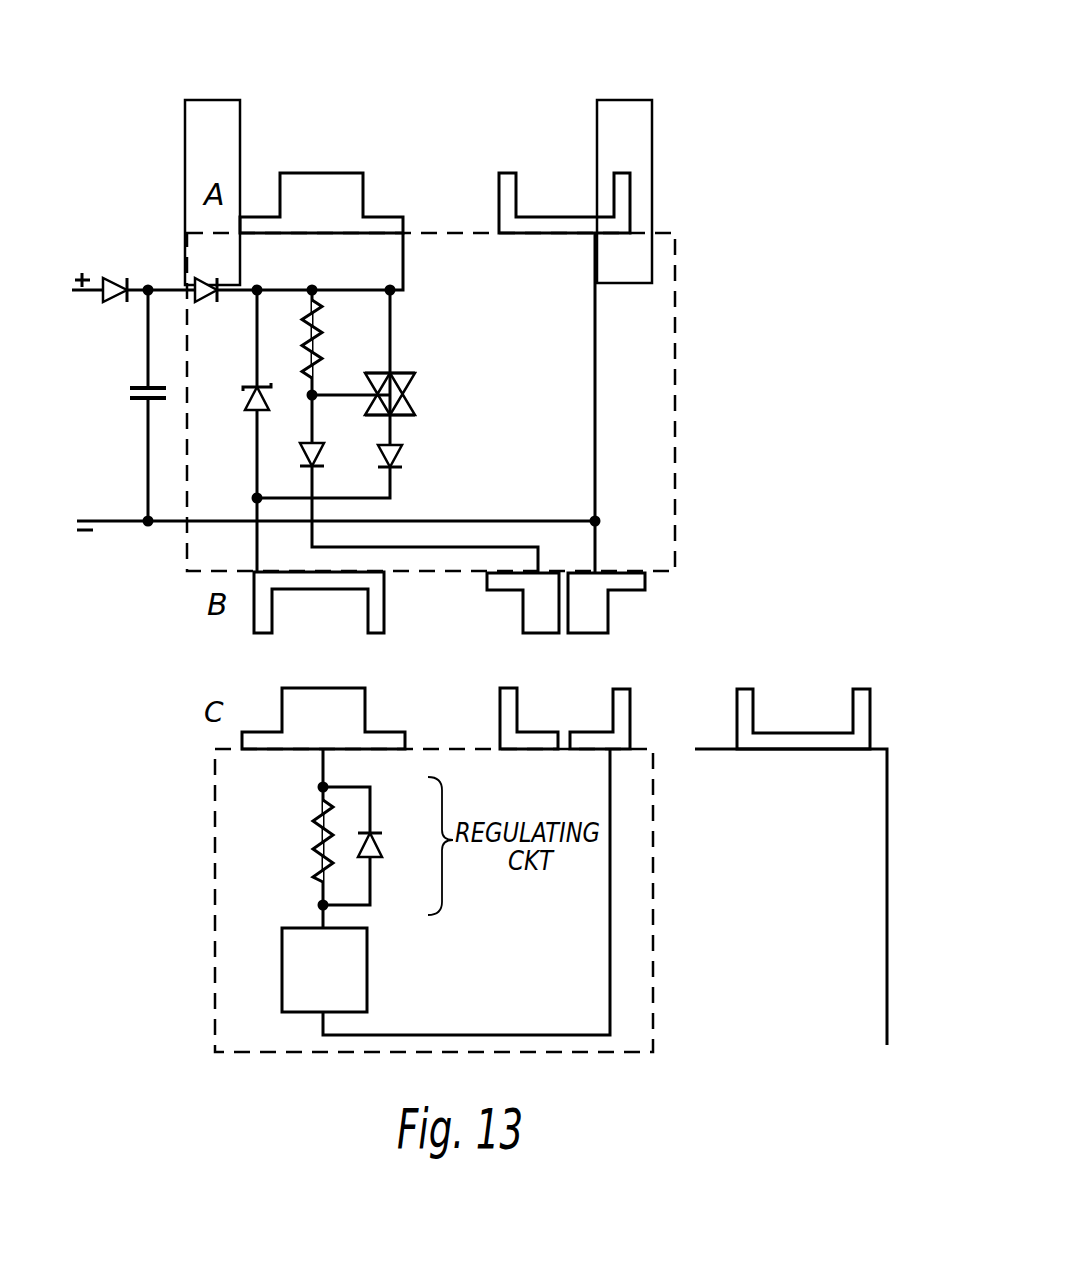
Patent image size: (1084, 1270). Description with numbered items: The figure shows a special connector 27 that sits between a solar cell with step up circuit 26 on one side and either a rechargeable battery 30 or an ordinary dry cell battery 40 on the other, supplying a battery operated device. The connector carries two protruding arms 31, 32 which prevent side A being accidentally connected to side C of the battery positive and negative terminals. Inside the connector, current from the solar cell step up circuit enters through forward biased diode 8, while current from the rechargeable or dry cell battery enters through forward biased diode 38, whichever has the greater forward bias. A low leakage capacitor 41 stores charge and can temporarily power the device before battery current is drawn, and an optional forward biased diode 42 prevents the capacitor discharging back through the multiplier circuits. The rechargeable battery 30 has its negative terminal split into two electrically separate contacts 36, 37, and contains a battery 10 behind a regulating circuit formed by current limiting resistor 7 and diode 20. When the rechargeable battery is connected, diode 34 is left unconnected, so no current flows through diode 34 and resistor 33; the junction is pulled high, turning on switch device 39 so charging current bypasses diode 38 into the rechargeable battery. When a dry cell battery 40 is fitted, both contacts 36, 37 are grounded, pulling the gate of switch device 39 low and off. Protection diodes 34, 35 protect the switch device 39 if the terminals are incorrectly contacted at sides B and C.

The protruding arm 32 is at (225, 100).
The protruding arm 31 is at (630, 100).
The forward-biased diode 42 is at (113, 278).
The diode 8 is at (200, 302).
The low leakage capacitor 41 is at (138, 400).
The diode 38 is at (245, 397).
The resistor 33 is at (320, 340).
The switch device 39 is at (410, 372).
The diode 34 is at (322, 452).
The protection diode 35 is at (402, 456).
The connector 27 is at (714, 386).
The contact 36 is at (530, 615).
The contact 37 is at (590, 622).
The step up circuit 26 is at (672, 716).
The dry cell battery 40 is at (868, 715).
The current limiting resistor 7 is at (318, 830).
The diode 20 is at (374, 888).
The battery 10 is at (334, 984).
The rechargeable battery 30 is at (655, 963).